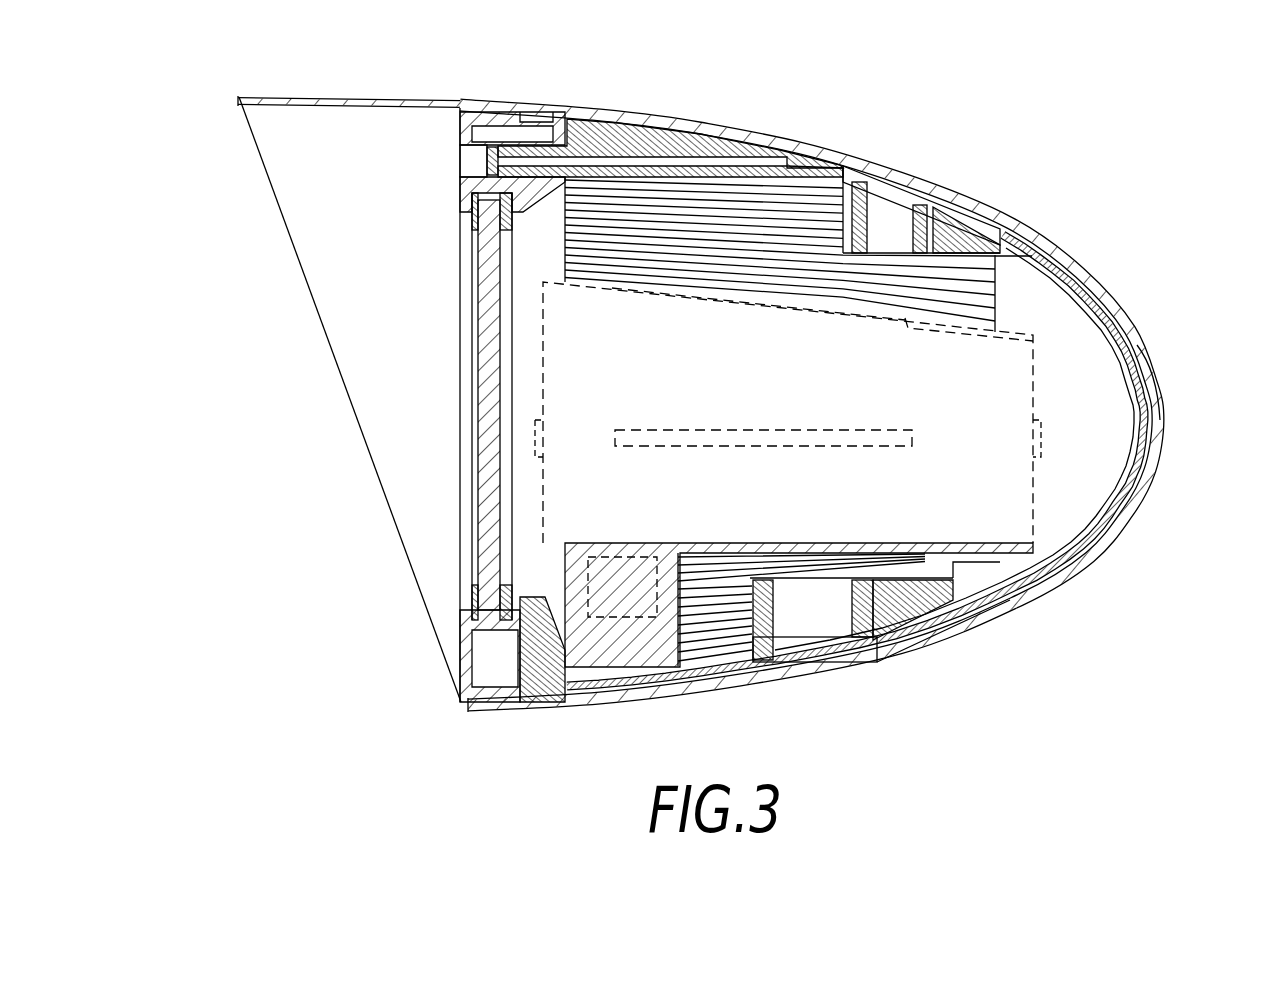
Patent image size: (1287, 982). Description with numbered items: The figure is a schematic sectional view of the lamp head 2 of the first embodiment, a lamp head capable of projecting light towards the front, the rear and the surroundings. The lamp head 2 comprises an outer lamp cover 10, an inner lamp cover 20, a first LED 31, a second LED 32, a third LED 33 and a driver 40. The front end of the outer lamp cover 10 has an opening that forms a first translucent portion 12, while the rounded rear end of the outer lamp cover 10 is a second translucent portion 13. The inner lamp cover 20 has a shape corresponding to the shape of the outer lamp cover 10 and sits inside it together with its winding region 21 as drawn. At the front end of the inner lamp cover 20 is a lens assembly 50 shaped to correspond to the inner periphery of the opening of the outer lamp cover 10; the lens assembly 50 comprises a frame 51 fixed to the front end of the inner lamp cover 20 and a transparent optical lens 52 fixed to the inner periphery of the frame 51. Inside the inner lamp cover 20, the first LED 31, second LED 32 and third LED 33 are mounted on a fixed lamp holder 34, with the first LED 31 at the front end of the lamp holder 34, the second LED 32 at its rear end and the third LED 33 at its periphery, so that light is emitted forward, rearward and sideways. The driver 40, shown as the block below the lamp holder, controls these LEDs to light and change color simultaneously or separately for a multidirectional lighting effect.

The lamp head 2 is at (1098, 142).
The outer lamp cover 10 is at (1018, 220).
The first translucent portion 12 is at (250, 130).
The second translucent portion 13 is at (1165, 362).
The inner lamp cover 20 is at (950, 208).
The winding / coil 21 is at (680, 210).
The first LED 31 is at (535, 438).
The second LED 32 is at (1040, 437).
The third LED 33 is at (762, 310).
The lamp holder 34 is at (1033, 492).
The driver 40 is at (622, 617).
The lens assembly 50 is at (584, 435).
The frame 51 is at (460, 668).
The transparent optical lens 52 is at (477, 502).